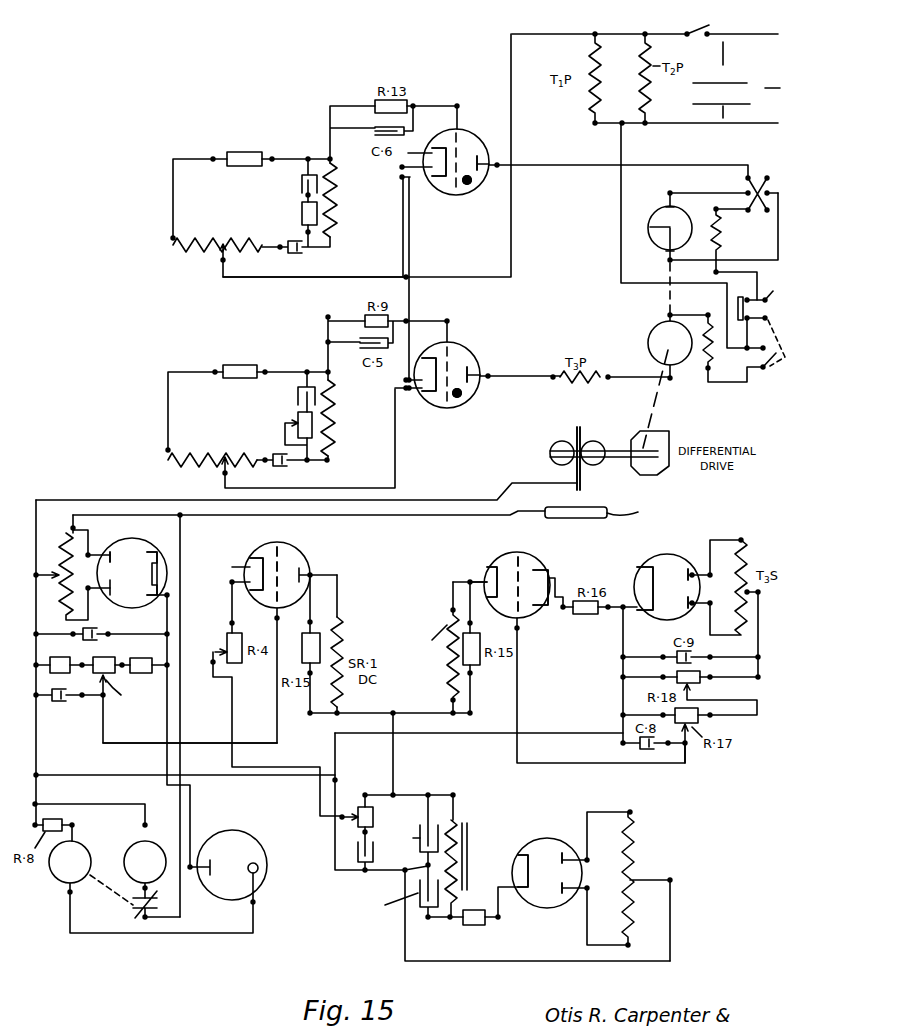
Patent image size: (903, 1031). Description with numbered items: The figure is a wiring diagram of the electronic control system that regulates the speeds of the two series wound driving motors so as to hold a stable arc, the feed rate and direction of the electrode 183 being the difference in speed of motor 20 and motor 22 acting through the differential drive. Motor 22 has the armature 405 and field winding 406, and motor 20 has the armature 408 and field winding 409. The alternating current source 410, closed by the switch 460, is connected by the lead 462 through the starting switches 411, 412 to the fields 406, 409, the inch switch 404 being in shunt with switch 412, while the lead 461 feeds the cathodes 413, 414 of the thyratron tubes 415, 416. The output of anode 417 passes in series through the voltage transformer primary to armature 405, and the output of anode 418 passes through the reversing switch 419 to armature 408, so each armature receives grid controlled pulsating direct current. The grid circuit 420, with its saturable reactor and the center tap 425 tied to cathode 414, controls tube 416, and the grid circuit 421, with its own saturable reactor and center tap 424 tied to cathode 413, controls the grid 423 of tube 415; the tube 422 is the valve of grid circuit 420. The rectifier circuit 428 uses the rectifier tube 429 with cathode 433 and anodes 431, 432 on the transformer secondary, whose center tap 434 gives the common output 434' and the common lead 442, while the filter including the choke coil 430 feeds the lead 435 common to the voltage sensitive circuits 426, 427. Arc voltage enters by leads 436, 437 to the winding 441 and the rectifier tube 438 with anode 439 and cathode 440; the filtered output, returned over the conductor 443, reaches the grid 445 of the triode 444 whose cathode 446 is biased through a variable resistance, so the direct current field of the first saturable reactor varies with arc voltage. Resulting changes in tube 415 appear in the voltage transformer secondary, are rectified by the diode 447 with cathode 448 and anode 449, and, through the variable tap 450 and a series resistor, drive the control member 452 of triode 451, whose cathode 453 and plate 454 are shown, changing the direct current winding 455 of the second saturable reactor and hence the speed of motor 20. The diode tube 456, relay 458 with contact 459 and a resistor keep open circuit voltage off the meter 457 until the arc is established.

The alternating current source 410 is at (649, 78).
The main switch 460 is at (709, 36).
The lead 461 is at (512, 229).
The lead 462 is at (620, 257).
The electron tube 422 is at (460, 129).
The anode 418 is at (477, 153).
The cathode 414 is at (442, 180).
The thyratron tube 416 is at (481, 190).
The grid circuit 420 is at (160, 233).
The center tap 425 is at (221, 263).
The reversing switch 419 is at (768, 182).
The armature 408 is at (657, 224).
The motor 20 is at (687, 221).
The field winding 409 is at (722, 228).
The inch switch 404 is at (749, 313).
The starting switch 412 is at (773, 311).
The starting switch 411 is at (773, 369).
The field winding 406 is at (717, 321).
The armature 405 is at (648, 343).
The motor 22 is at (692, 378).
The electrode 183 is at (582, 485).
The grid 423 is at (450, 341).
The anode 417 is at (478, 367).
The cathode 413 is at (432, 393).
The thyratron tube 415 is at (468, 402).
The grid circuit 421 is at (157, 447).
The center tap 424 is at (221, 474).
The lead 436 is at (427, 502).
The lead 437 is at (421, 518).
The transformer winding 441 is at (72, 526).
The rectifier tube 438 is at (165, 540).
The anode 439 is at (118, 540).
The cathode 440 is at (155, 598).
The voltage sensitive circuit 426 is at (140, 733).
The conductor 443 is at (148, 745).
The common lead 442 is at (88, 775).
The triode 444 is at (309, 556).
The cathode 446 is at (262, 557).
The grid 445 is at (287, 545).
The direct current winding 455 is at (448, 682).
The common output 434' is at (369, 803).
The lead 435 is at (396, 777).
The voltage sensitive circuit 427 is at (572, 722).
The control member 452 is at (523, 555).
The cathode 453 is at (487, 566).
The triode 451 is at (539, 556).
The plate 454 is at (549, 568).
The diode 447 is at (673, 553).
The cathode 448 is at (647, 557).
The anode 449 is at (689, 600).
The variable tap 450 is at (690, 692).
The relay 458 is at (151, 877).
The meter 457 is at (139, 862).
The contact 459 is at (133, 903).
The diode tube 456 is at (254, 829).
The rectifier circuit 428 is at (532, 958).
The choke coil 430 is at (467, 824).
The rectifier tube 429 is at (538, 838).
The cathode 433 is at (520, 858).
The anode 431 is at (563, 855).
The anode 432 is at (562, 897).
The center tap 434 is at (672, 886).